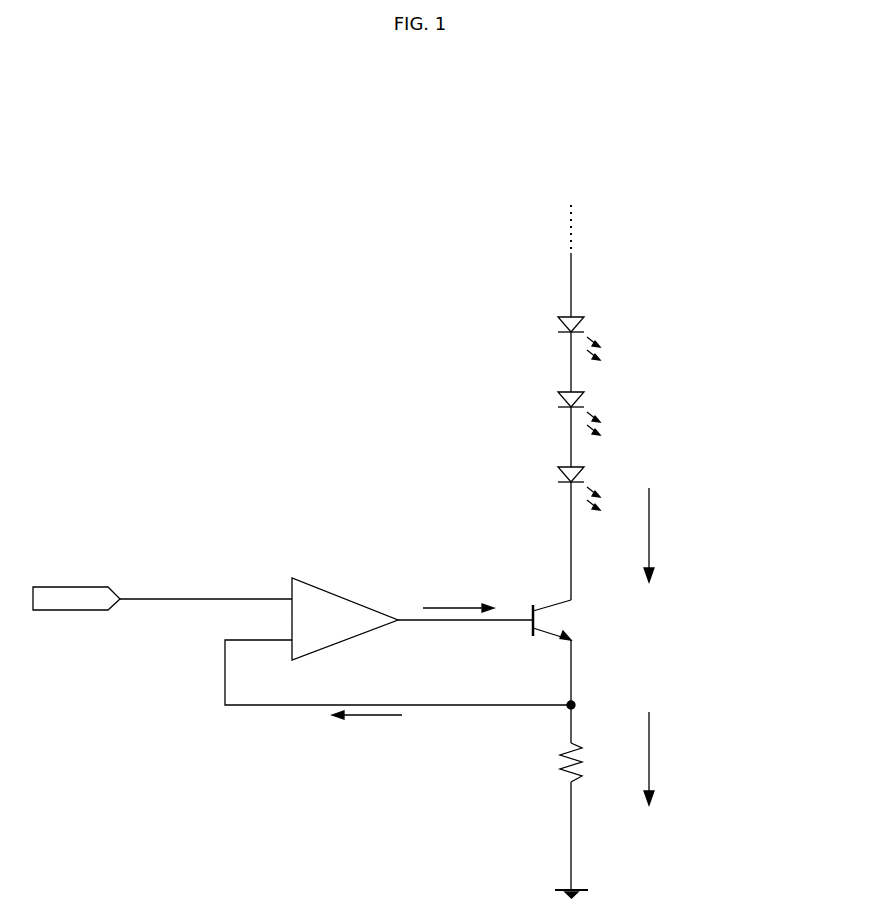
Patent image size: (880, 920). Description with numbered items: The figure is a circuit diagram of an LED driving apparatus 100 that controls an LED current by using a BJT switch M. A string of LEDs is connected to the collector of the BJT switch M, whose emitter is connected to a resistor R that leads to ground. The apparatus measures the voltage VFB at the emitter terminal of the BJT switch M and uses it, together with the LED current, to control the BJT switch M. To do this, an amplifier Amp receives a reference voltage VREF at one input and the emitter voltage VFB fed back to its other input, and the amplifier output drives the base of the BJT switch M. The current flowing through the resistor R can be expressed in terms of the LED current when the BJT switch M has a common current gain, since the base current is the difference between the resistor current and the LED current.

The LED driving apparatus 100 is at (378, 145).
The BJT switch M is at (574, 620).
The resistor R is at (581, 762).
The amplifier Amp is at (345, 619).
The reference voltage VREF is at (162, 598).
The BJT emitter terminal voltage VFB is at (398, 672).